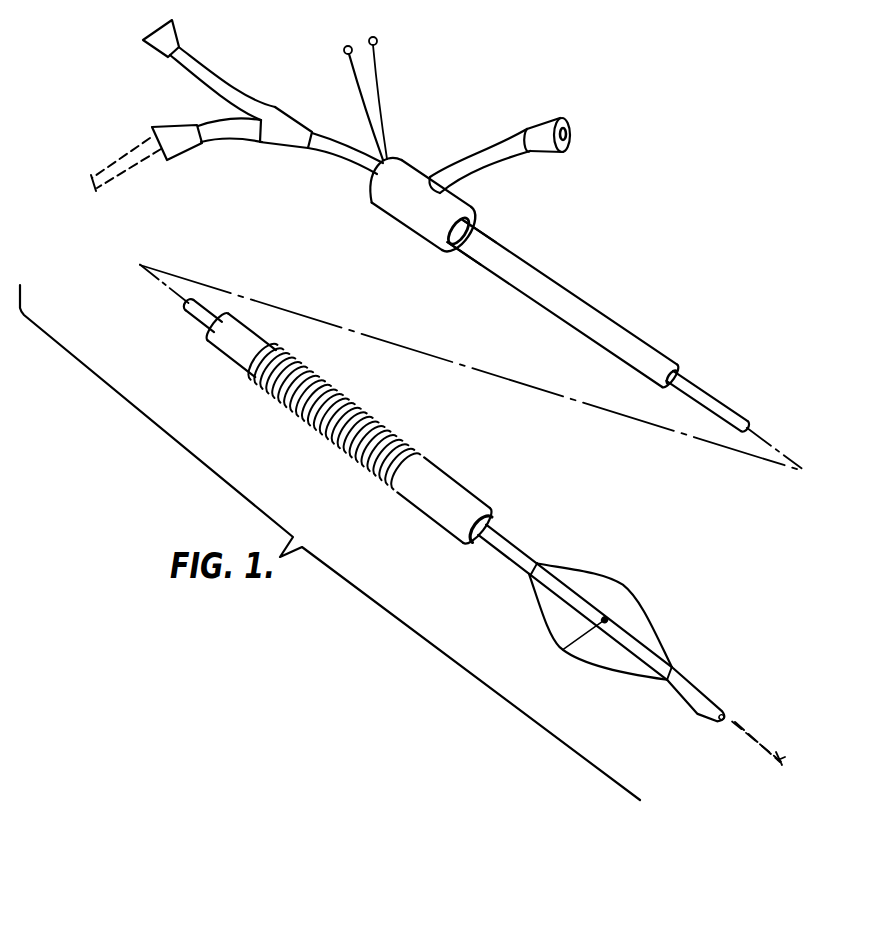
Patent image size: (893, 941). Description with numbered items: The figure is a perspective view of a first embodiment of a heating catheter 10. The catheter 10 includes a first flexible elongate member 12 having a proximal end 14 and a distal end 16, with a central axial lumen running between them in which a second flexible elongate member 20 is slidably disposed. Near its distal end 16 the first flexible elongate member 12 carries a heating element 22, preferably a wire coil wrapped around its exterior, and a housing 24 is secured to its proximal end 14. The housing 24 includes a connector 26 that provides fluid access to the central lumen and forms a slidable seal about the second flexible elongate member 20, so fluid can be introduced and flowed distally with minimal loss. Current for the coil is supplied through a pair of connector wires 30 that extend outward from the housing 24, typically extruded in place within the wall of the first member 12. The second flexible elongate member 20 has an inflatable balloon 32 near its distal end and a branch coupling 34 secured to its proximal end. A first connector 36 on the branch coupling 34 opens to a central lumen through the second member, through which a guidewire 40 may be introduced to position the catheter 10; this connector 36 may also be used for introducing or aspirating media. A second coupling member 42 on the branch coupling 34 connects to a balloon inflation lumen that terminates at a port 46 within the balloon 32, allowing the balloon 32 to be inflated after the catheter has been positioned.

The catheter 10 is at (650, 228).
The first flexible elongate member 12 is at (562, 291).
The proximal end 14 is at (494, 223).
The distal end 16 is at (503, 506).
The second flexible elongate member 20 is at (699, 392).
The heating element 22 is at (422, 439).
The housing 24 is at (407, 214).
The connector 26 is at (540, 128).
The connector wires 30 is at (376, 95).
The inflatable balloon 32 is at (651, 610).
The branch coupling 34 is at (283, 140).
The first connector 36 is at (220, 137).
The guidewire 40 is at (138, 162).
The second coupling member 42 is at (202, 68).
The port 46 is at (570, 657).